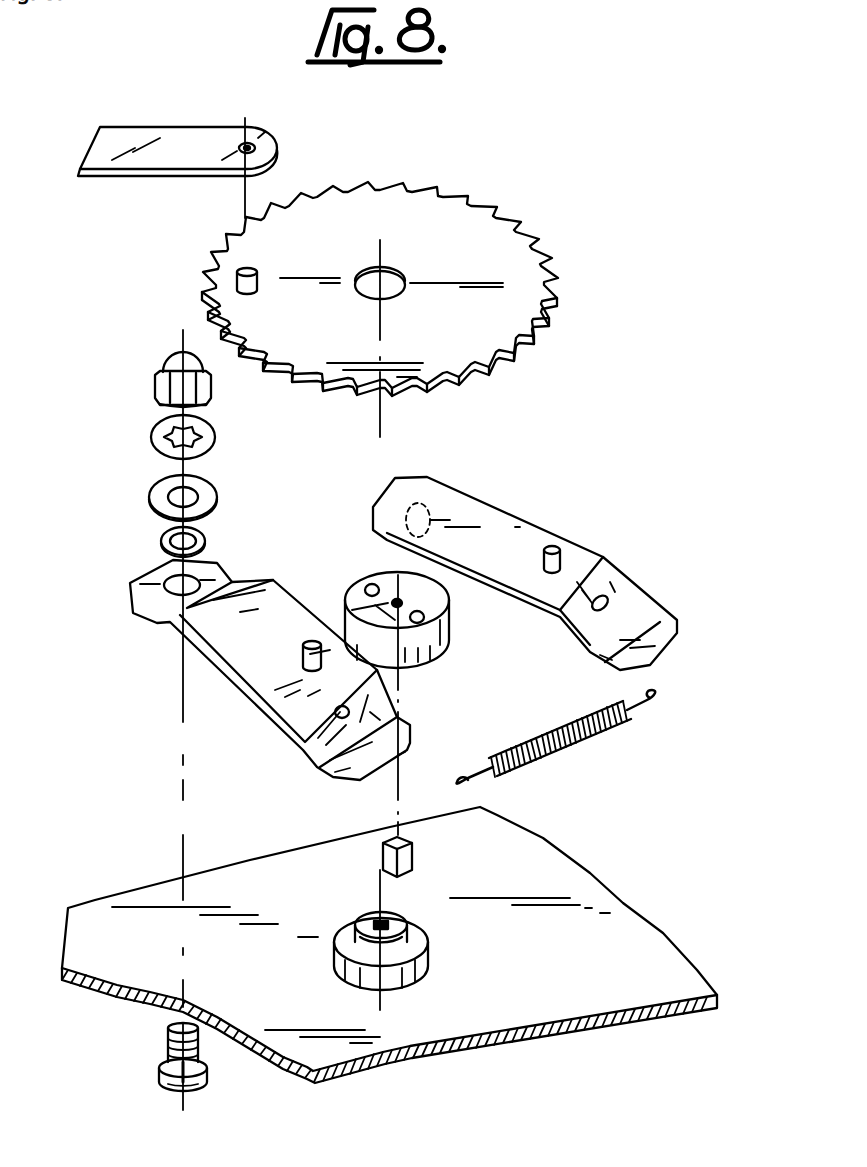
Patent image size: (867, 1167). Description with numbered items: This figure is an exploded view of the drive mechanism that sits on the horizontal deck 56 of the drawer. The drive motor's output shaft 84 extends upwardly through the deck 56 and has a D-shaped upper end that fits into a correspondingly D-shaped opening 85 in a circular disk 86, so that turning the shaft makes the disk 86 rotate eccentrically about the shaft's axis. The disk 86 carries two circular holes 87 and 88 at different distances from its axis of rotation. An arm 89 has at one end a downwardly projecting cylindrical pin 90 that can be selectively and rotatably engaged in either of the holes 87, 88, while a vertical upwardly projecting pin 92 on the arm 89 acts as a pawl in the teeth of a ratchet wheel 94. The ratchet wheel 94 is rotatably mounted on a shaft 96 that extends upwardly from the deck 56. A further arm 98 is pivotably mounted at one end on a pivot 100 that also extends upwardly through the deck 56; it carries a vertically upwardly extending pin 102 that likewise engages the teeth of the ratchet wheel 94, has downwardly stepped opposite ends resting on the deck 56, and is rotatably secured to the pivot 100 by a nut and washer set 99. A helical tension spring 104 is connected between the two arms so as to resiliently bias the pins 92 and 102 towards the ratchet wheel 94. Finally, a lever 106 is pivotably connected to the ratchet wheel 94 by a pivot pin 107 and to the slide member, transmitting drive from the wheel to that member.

The horizontal deck 56 is at (623, 923).
The output shaft 84 is at (413, 857).
The D-shaped opening 85 is at (370, 613).
The disk 86 is at (423, 643).
The hole 87 is at (428, 617).
The hole 88 is at (372, 583).
The arm 89 is at (523, 525).
The cylindrical pin 90 is at (457, 490).
The pin 92 is at (563, 557).
The ratchet wheel 94 is at (507, 240).
The shaft 96 is at (360, 920).
The further arm 98 is at (270, 680).
The nut and washer set 99 is at (130, 468).
The pivot 100 is at (163, 1057).
The pin 102 is at (305, 658).
The helical tension spring 104 is at (577, 747).
The lever 106 is at (182, 133).
The pivot pin 107 is at (257, 262).